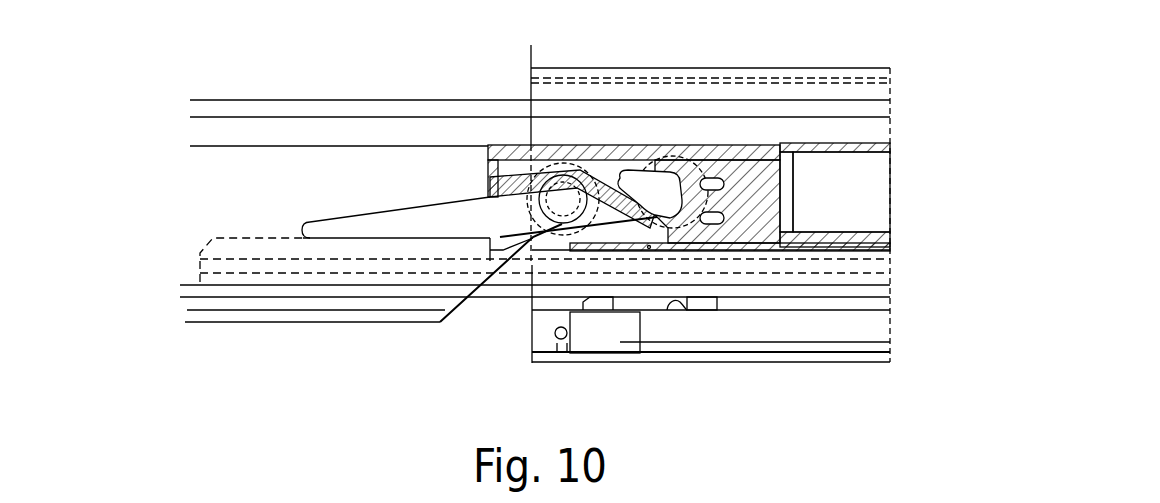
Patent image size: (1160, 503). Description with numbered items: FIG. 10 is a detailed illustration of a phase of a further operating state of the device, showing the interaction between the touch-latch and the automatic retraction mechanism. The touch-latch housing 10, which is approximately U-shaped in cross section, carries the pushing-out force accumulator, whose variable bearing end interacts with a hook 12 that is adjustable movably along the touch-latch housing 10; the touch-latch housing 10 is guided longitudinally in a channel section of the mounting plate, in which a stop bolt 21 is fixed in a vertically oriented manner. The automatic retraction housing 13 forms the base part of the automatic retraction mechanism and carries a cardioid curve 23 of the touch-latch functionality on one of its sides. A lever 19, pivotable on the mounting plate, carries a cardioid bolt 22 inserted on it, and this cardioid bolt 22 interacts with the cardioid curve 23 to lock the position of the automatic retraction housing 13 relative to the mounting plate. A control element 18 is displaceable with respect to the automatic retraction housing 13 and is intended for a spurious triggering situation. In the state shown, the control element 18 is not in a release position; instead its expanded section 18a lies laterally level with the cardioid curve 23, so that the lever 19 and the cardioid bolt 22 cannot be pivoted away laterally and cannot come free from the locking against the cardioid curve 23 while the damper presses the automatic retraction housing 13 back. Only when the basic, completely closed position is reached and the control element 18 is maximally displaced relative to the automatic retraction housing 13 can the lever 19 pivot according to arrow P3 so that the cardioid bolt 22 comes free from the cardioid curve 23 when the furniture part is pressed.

The touch-latch housing 10 is at (590, 327).
The hook 12 is at (641, 309).
The automatic retraction housing 13 is at (380, 130).
The control element 18 is at (545, 234).
The expanded section 18a is at (249, 234).
The lever 19 is at (612, 178).
The stop bolt 21 is at (556, 340).
The cardioid bolt 22 is at (675, 193).
The cardioid curve 23 is at (687, 219).
The arrow P3 is at (647, 245).